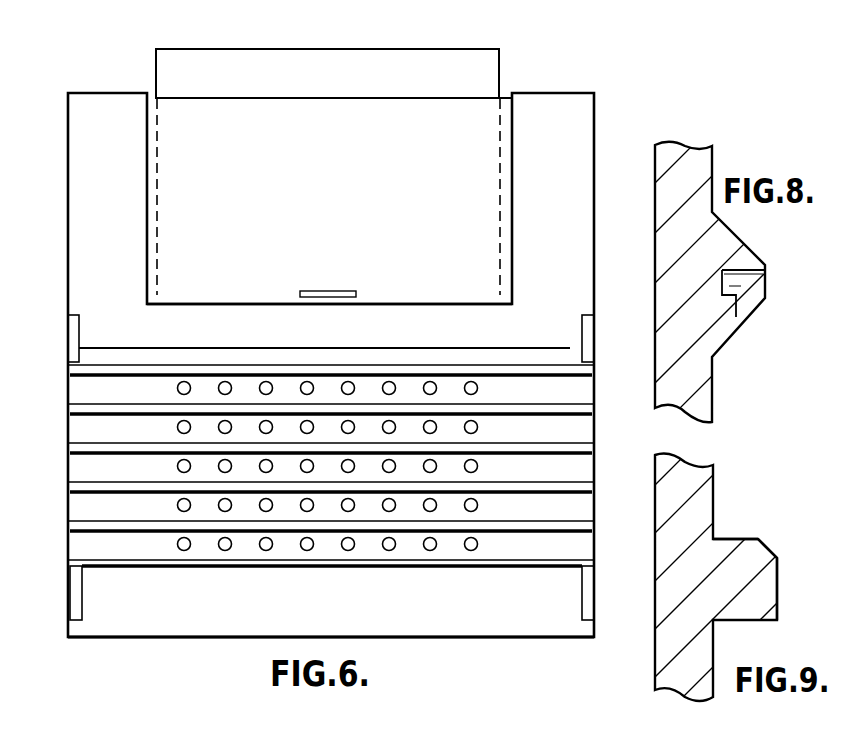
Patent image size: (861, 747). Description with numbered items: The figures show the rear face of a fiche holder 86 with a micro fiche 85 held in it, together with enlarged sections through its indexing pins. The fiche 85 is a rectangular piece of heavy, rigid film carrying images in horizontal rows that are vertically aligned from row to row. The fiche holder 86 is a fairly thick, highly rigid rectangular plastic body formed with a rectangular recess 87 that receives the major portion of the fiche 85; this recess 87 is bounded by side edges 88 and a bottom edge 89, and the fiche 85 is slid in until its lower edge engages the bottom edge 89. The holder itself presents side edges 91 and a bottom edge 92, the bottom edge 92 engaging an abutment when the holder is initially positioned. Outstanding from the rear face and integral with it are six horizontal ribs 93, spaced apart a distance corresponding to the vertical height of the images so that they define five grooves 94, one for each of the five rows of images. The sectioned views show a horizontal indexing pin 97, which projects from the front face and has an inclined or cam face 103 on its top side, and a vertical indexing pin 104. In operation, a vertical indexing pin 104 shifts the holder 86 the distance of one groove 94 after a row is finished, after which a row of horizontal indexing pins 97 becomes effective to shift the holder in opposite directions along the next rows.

In FIG. 6, the micro fiche 85 is at (483, 52).
In FIG. 6, the fiche holder 86 is at (591, 95).
In FIG. 8, the fiche holder 86 is at (703, 378).
In FIG. 9, the fiche holder 86 is at (689, 693).
In FIG. 6, the rectangular recess 87 is at (507, 96).
In FIG. 6, the side edges of recess 88 is at (513, 148).
In FIG. 6, the bottom edge of recess 89 is at (324, 319).
In FIG. 6, the side edges of fiche holder 91 is at (68, 412).
In FIG. 6, the bottom edge of fiche holder 92 is at (452, 638).
In FIG. 6, the horizontal ribs 93 is at (175, 567).
In FIG. 6, the grooves 94 is at (88, 540).
In FIG. 9, the horizontal indexing pins 97 is at (731, 546).
In FIG. 9, the inclined cam face 103 is at (770, 550).
In FIG. 8, the vertical indexing pin 104 is at (738, 316).